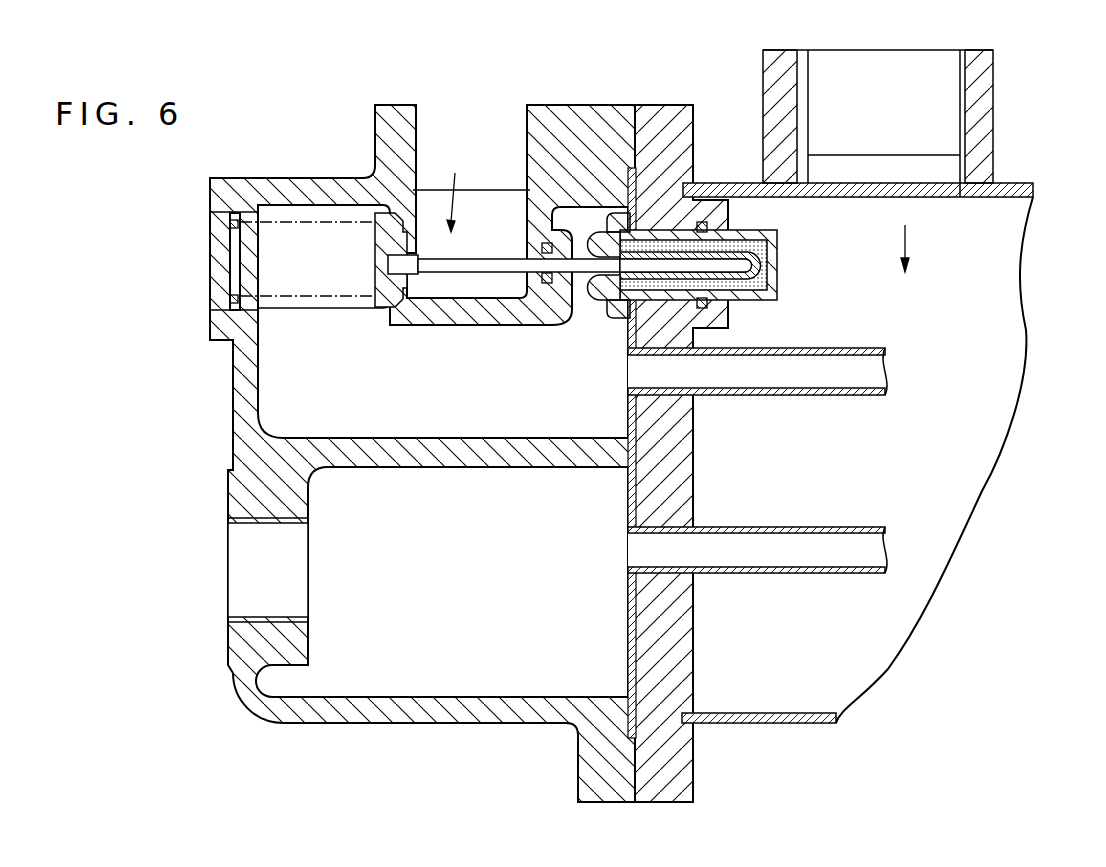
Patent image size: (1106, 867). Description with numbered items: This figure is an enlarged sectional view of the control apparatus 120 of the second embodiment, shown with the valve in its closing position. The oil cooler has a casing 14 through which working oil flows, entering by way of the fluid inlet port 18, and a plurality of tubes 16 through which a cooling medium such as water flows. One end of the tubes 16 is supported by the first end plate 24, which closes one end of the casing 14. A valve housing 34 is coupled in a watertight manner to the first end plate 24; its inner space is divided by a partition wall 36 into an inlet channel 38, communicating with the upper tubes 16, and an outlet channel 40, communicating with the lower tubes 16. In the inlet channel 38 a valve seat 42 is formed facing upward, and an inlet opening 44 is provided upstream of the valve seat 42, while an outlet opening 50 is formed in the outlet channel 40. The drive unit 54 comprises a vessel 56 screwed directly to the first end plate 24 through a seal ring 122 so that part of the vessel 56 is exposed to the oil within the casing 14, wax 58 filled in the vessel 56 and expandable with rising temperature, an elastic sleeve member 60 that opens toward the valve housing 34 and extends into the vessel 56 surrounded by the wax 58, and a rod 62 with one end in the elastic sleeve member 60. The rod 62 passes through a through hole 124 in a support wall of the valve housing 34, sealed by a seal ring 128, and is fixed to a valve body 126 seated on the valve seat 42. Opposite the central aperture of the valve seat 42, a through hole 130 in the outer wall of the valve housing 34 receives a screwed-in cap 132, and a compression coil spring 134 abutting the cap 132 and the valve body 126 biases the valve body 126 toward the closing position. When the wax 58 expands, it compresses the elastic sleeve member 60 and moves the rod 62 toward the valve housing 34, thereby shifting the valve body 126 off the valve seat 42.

The casing 14 is at (740, 185).
The tubes 16 is at (843, 390).
The fluid inlet port 18 is at (960, 100).
The first end plate 24 is at (662, 112).
The valve housing 34 is at (248, 400).
The partition wall 36 is at (552, 445).
The inlet channel 38 is at (432, 440).
The outlet channel 40 is at (462, 700).
The valve seat 42 is at (402, 310).
The inlet opening 44 is at (417, 126).
The outlet opening 50 is at (290, 622).
The drive unit 54 is at (778, 231).
The vessel 56 is at (778, 256).
The wax 58 is at (775, 281).
The elastic sleeve member 60 is at (732, 290).
The rod 62 is at (458, 258).
The control apparatus 120 is at (332, 126).
The seal ring 122 is at (708, 226).
The through hole 124 is at (540, 247).
The valve body 126 is at (382, 270).
The seal ring 128 is at (540, 278).
The through hole 130 is at (236, 213).
The cap 132 is at (212, 262).
The compression coil spring 134 is at (296, 300).